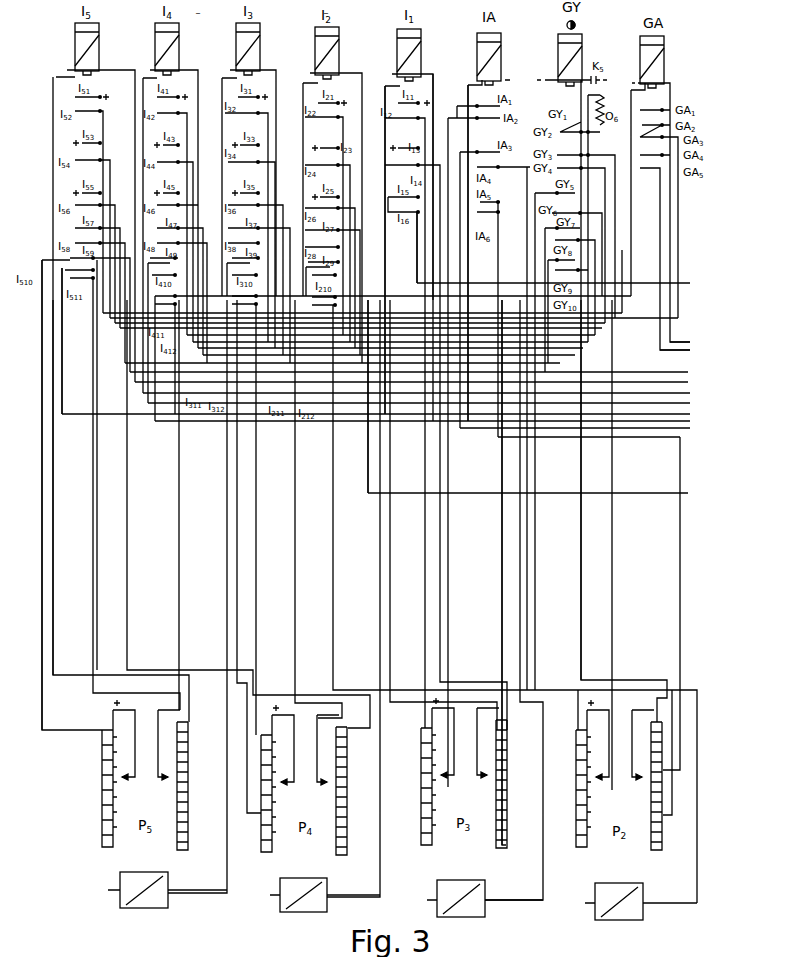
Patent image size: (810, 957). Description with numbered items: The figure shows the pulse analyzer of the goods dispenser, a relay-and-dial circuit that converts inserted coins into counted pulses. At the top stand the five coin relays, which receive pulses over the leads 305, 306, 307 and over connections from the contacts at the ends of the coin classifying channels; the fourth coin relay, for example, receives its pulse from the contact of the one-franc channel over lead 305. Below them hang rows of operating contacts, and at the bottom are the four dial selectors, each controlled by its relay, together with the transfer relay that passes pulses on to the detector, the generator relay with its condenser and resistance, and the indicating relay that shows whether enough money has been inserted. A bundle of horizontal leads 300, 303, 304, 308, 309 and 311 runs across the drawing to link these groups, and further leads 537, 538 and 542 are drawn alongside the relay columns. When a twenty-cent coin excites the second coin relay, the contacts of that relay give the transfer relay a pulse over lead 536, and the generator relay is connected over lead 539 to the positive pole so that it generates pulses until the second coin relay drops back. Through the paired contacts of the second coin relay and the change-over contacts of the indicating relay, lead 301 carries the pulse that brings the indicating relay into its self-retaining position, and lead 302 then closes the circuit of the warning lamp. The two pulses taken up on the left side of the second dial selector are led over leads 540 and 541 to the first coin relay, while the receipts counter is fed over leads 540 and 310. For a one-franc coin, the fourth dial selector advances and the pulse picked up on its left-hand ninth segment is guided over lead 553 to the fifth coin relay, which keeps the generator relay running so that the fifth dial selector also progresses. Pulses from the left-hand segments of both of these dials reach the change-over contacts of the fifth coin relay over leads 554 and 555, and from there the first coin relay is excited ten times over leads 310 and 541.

The lead 300 is at (567, 283).
The lead 301 is at (690, 342).
The lead 302 is at (689, 352).
The lead 303 is at (688, 372).
The lead 304 is at (688, 382).
The lead 305 is at (690, 393).
The lead 306 is at (690, 403).
The lead 307 is at (292, 156).
The lead 308 is at (690, 421).
The lead 309 is at (690, 428).
The lead 310 is at (152, 422).
The lead 311 is at (688, 493).
The lead 536 is at (466, 272).
The lead 537 is at (502, 570).
The lead 538 is at (394, 250).
The lead 539 is at (399, 251).
The lead 540 is at (581, 570).
The lead 541 is at (433, 80).
The lead 542 is at (406, 310).
The lead 553 is at (42, 528).
The lead 554 is at (56, 500).
The lead 555 is at (44, 470).